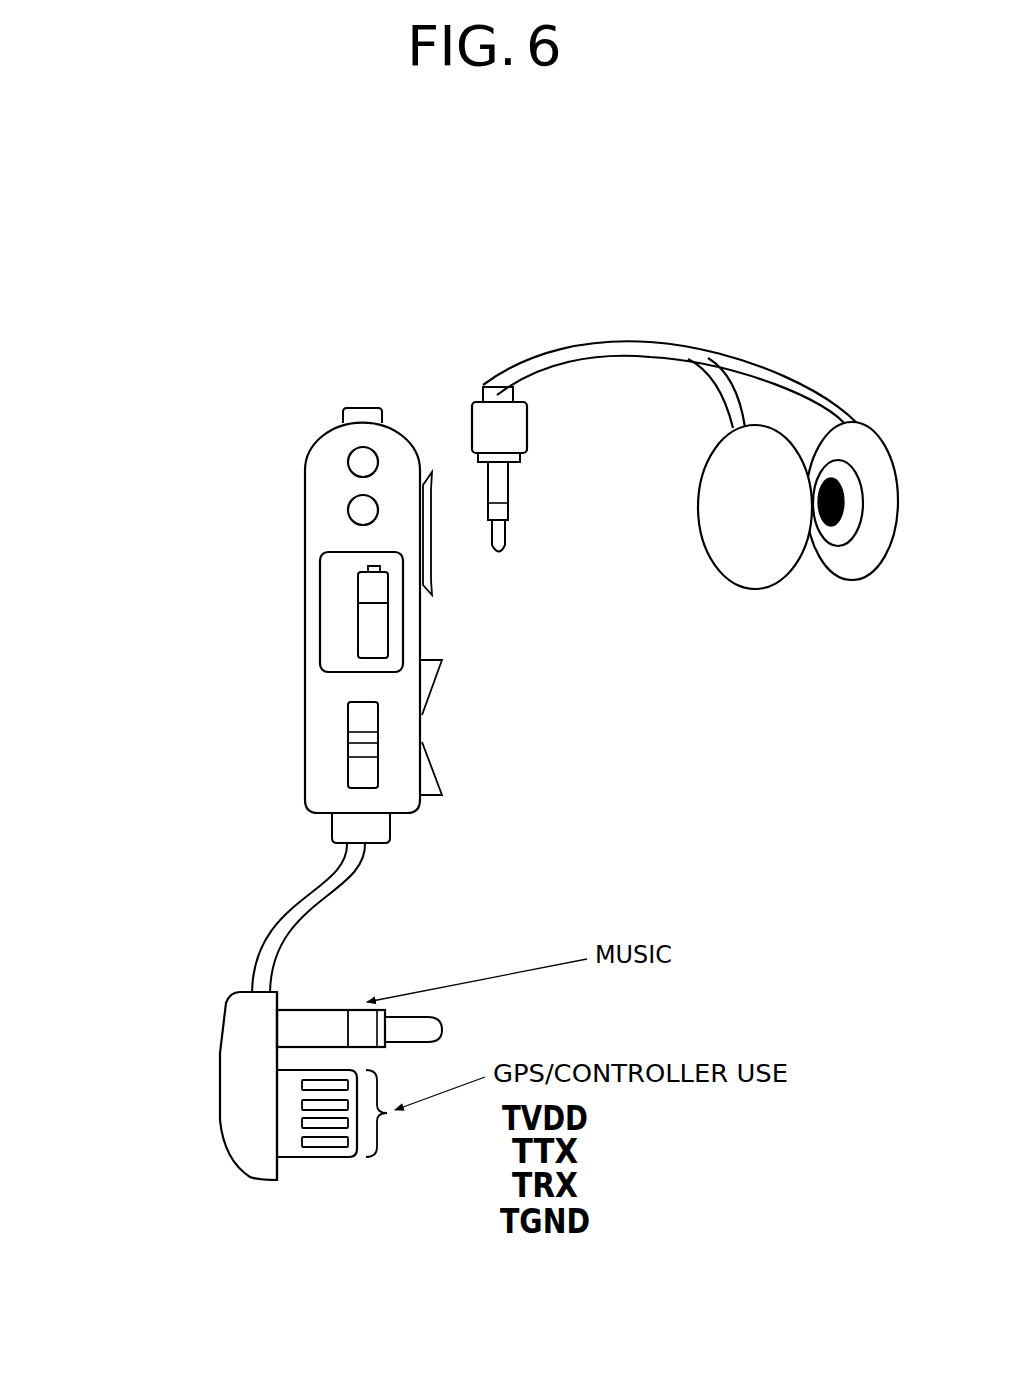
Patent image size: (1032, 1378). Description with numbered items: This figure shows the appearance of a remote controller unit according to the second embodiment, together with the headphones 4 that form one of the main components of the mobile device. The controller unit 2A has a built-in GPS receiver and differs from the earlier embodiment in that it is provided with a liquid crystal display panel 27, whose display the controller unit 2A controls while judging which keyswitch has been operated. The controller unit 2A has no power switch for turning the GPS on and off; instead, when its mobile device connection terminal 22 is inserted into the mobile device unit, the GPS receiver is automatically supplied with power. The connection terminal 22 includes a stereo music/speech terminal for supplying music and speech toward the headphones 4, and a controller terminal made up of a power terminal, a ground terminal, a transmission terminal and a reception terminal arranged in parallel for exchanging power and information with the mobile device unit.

The controller unit 2A is at (285, 455).
The liquid crystal display panel 27 is at (397, 621).
The headphones 4 is at (837, 590).
The mobile device connection terminal 22 is at (190, 1081).